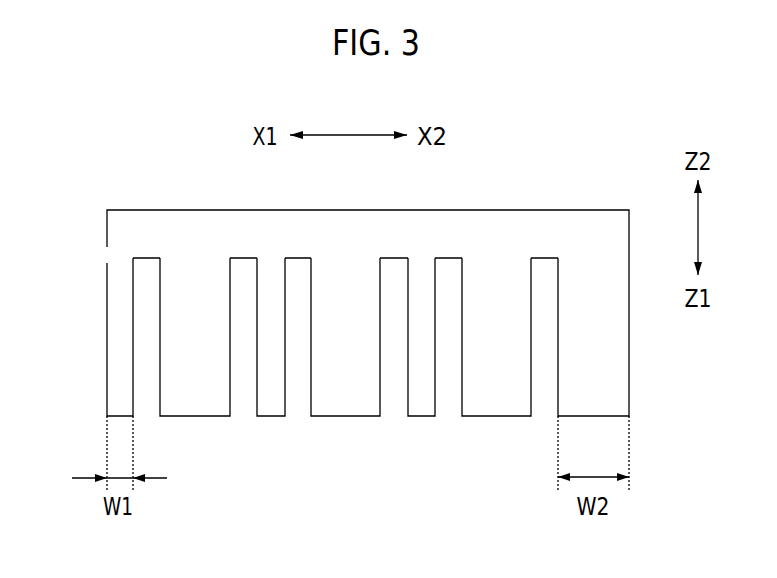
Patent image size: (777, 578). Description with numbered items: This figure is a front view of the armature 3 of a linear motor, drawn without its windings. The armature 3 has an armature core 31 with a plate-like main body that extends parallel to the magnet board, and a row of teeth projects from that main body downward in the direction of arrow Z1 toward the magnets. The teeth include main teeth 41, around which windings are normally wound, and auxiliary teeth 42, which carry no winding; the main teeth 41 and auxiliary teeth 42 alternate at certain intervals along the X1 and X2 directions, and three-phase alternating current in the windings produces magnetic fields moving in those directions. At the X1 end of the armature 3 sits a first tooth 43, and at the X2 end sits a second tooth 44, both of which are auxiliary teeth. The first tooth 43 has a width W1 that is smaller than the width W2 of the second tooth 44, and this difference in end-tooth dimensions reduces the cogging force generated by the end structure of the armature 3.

The armature 3 is at (110, 168).
The armature core 31 is at (558, 210).
The main tooth 41 is at (203, 416).
The auxiliary tooth 42 is at (275, 416).
The first tooth 43 is at (106, 342).
The second tooth 44 is at (629, 380).